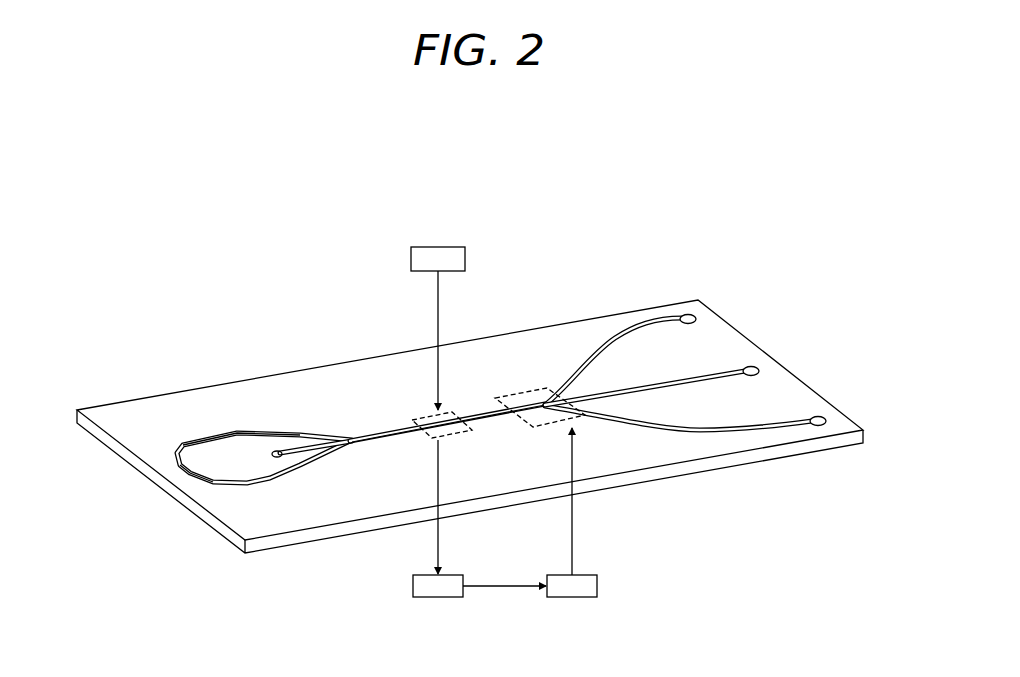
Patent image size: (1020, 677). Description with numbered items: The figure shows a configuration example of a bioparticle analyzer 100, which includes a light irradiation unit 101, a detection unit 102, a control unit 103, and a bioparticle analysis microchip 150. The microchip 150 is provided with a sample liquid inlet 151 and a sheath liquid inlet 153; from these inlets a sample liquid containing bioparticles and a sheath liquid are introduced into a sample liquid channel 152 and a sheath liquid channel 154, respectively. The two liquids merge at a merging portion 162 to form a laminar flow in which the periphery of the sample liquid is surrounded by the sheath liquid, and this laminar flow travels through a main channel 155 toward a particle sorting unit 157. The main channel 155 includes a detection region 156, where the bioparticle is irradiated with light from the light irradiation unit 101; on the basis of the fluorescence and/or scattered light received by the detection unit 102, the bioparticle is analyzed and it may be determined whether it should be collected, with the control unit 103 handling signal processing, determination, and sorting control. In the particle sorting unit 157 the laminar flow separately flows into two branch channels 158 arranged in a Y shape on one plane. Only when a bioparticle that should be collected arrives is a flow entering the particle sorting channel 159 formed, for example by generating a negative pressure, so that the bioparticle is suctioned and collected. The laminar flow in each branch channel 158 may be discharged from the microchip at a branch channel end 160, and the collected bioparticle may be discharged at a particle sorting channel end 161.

The bioparticle analyzer 100 is at (500, 375).
The light irradiation unit 101 is at (452, 247).
The detection unit 102 is at (463, 592).
The control unit 103 is at (597, 592).
The bioparticle analysis microchip 150 is at (662, 305).
The sample liquid inlet 151 is at (278, 453).
The sample liquid channel 152 is at (302, 445).
The sheath liquid inlet 153 is at (185, 467).
The sheath liquid channel 154 is at (195, 443).
The main channel 155 is at (373, 443).
The detection region 156 is at (425, 418).
The particle sorting unit 157 is at (533, 390).
The branch channel 158 is at (600, 362).
The particle sorting channel 159 is at (748, 370).
The branch channel end 160 is at (694, 314).
The particle sorting channel end 161 is at (760, 368).
The merging portion 162 is at (360, 445).